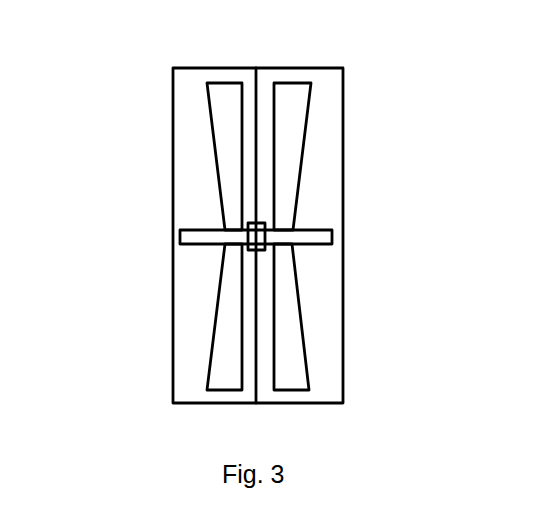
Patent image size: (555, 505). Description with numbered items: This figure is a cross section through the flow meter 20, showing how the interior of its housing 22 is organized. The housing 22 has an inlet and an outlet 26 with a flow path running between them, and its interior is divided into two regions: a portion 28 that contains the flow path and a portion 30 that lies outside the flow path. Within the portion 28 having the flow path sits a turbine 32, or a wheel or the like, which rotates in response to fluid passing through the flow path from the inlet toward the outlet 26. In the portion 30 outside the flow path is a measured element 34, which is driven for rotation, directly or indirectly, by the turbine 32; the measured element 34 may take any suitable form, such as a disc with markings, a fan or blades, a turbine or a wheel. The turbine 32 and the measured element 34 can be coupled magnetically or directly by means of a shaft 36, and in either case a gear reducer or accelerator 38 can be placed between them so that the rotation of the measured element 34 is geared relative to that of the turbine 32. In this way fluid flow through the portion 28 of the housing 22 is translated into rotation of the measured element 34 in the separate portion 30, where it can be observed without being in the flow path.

The flow meter 20 is at (373, 56).
The housing 22 is at (187, 68).
The outlet 26 is at (213, 336).
The portion having the flow path 28 is at (190, 288).
The portion outside the flow path 30 is at (317, 338).
The turbine 32 is at (212, 152).
The measured element 34 is at (304, 148).
The shaft 36 is at (317, 247).
The gear reducer or accelerator 38 is at (258, 250).